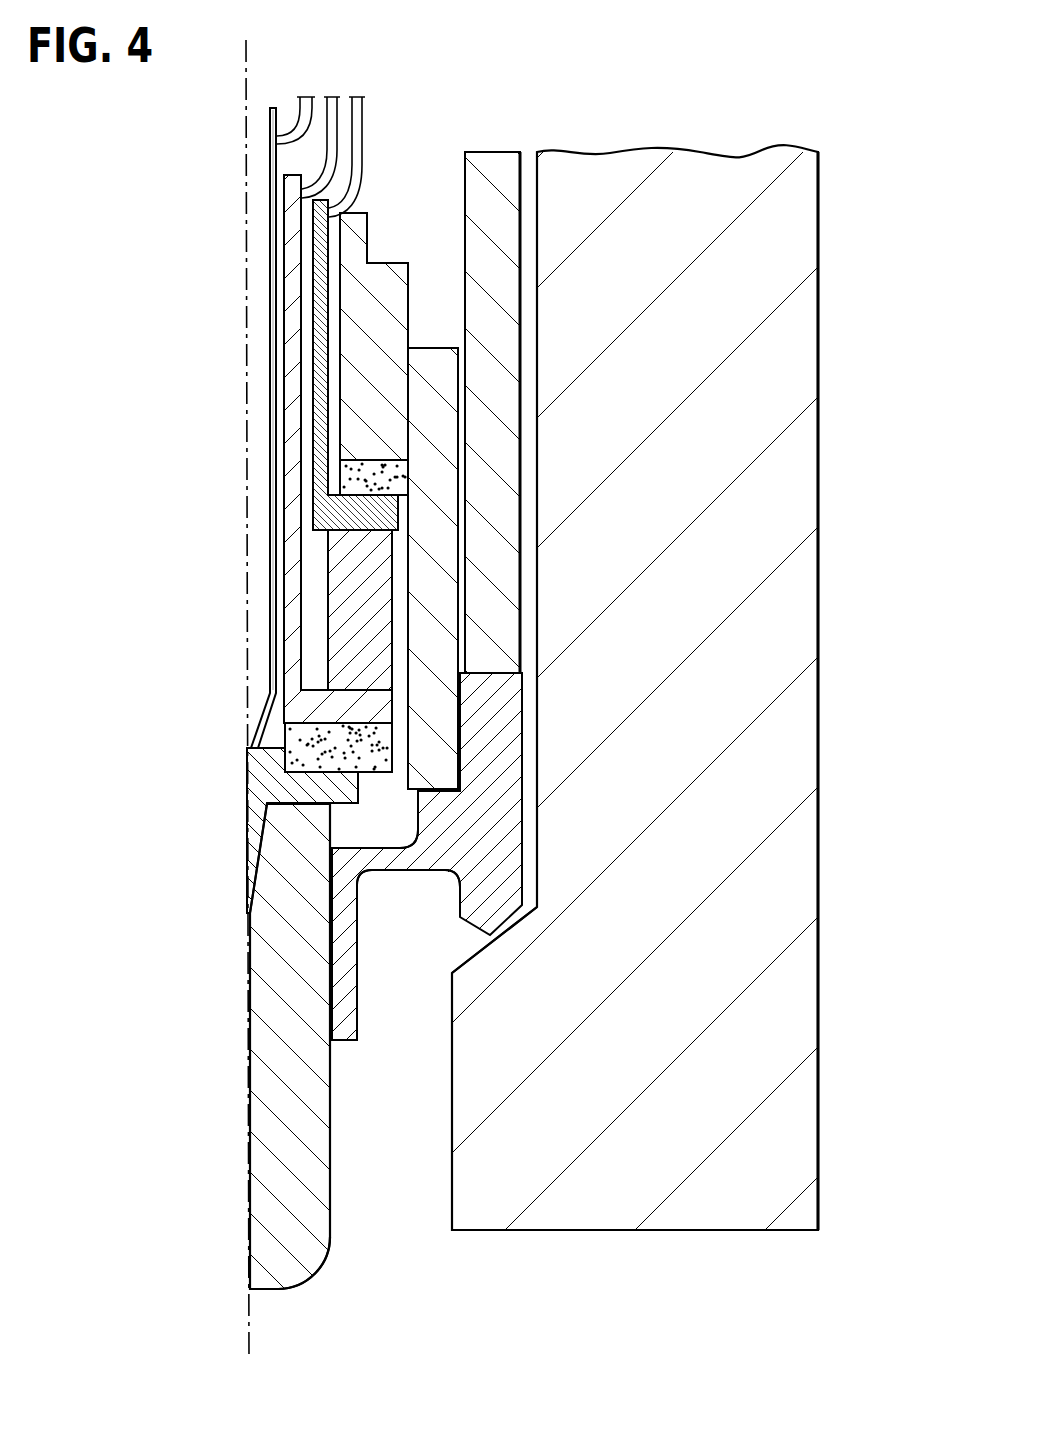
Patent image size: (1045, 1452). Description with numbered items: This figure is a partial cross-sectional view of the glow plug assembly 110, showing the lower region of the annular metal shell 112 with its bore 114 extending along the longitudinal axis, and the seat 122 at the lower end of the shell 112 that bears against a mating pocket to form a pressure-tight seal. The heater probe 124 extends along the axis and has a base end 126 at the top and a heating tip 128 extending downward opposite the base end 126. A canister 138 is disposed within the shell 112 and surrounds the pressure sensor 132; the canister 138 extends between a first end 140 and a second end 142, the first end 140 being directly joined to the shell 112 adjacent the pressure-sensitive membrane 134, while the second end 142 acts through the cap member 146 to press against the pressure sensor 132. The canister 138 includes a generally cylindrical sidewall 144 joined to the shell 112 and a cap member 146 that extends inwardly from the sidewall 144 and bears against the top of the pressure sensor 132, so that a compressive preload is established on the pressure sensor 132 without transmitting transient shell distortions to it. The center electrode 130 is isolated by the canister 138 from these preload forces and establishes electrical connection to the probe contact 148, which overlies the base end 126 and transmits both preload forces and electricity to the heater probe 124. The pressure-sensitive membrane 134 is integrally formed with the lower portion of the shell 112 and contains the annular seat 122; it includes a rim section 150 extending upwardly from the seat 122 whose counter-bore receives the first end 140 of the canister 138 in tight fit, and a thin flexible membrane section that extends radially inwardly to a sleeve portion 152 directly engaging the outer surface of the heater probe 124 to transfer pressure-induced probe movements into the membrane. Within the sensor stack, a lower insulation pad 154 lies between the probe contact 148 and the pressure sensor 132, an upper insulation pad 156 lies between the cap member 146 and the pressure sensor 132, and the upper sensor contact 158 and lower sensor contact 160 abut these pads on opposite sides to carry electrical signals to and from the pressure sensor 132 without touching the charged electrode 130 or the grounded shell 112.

The glow plug assembly 110 is at (226, 198).
The shell 112 is at (498, 142).
The bore 114 is at (465, 170).
The seat 122 is at (502, 930).
The heater probe 124 is at (342, 1172).
The base end 126 is at (278, 801).
The heating tip 128 is at (276, 1292).
The center electrode 130 is at (256, 281).
The pressure sensor 132 is at (320, 597).
The pressure-sensitive membrane 134 is at (393, 873).
The canister 138 is at (472, 428).
The first end 140 is at (431, 794).
The second end 142 is at (440, 326).
The sidewall 144 is at (461, 567).
The cap member 146 is at (386, 263).
The probe contact 148 is at (359, 790).
The rim section 150 is at (524, 760).
The sleeve portion 152 is at (359, 976).
The lower insulation pad 154 is at (293, 748).
The upper insulation pad 156 is at (352, 480).
The upper sensor contact 158 is at (314, 347).
The lower sensor contact 160 is at (291, 676).